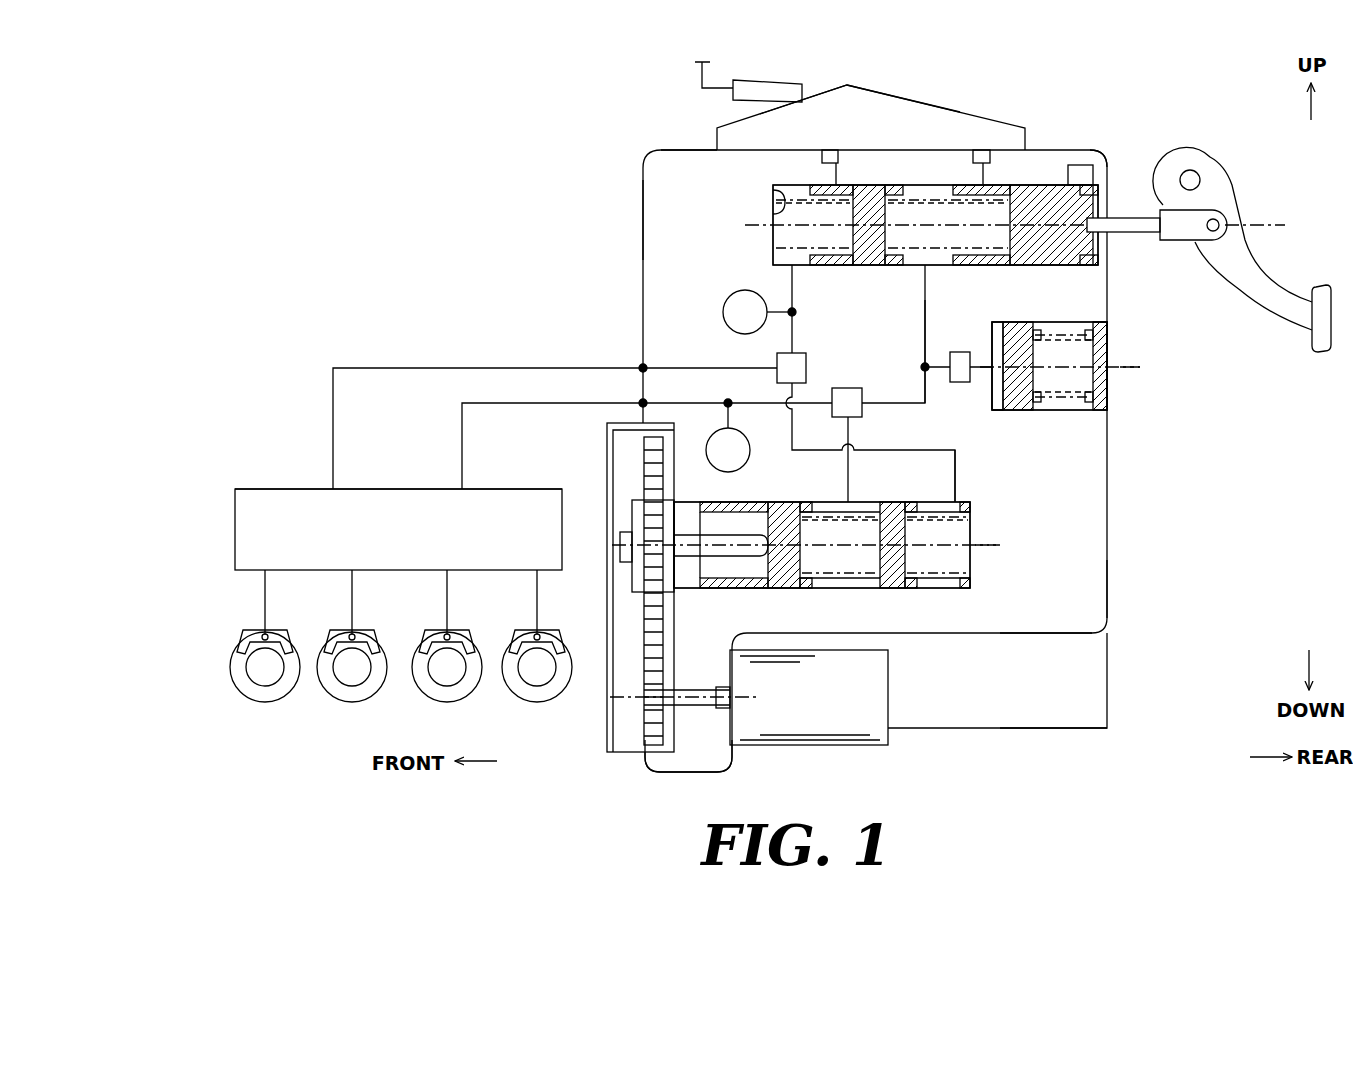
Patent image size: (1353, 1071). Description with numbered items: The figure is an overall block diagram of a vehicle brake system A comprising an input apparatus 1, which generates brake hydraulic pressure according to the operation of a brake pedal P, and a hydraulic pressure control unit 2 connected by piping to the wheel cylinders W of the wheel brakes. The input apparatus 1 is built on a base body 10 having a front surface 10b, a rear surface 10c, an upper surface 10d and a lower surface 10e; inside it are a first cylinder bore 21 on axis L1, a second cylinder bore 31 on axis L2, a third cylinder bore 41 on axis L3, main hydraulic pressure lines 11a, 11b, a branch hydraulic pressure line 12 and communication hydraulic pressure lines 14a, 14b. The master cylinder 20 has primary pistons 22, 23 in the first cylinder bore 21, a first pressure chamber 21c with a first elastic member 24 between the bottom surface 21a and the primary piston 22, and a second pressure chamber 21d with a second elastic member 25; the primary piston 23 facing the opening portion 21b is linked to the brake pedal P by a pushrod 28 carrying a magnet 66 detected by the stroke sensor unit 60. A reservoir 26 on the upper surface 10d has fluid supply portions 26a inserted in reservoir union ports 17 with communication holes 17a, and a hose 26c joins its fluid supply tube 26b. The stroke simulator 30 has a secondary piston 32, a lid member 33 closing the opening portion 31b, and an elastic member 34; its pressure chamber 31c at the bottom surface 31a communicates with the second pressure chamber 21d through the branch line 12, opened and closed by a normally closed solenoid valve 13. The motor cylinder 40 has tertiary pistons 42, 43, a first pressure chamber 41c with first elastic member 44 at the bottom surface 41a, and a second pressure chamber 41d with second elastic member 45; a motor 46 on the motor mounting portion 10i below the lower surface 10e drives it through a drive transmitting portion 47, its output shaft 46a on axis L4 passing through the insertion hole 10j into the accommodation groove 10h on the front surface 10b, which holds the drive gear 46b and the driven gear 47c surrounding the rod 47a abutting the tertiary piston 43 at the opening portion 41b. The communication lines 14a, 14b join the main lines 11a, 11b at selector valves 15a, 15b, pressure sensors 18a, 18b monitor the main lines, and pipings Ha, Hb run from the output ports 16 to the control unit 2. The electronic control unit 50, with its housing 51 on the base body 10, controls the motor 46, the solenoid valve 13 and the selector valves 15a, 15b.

The input apparatus 1 is at (1060, 100).
The hydraulic pressure control unit 2 is at (398, 529).
The base body 10 is at (690, 148).
The front surface 10b is at (643, 215).
The rear surface 10c is at (1107, 590).
The upper surface 10d is at (680, 150).
The lower surface 10e is at (1050, 633).
The accommodation groove 10h is at (648, 740).
The motor mounting portion 10i is at (732, 745).
The insertion hole 10j is at (730, 697).
The first main hydraulic pressure line 11a is at (680, 368).
The second main hydraulic pressure line 11b is at (925, 300).
The branch hydraulic pressure line 12 is at (927, 395).
The normally closed solenoid valve 13 is at (960, 352).
The first communication hydraulic pressure line 14a is at (955, 465).
The second communication hydraulic pressure line 14b is at (848, 470).
The first selector valve 15a is at (777, 370).
The second selector valve 15b is at (862, 398).
The output ports 16 is at (643, 368).
The reservoir union ports 17 is at (836, 150).
The communication holes 17a is at (836, 172).
The pressure sensor 18a is at (757, 312).
The pressure sensor 18b is at (728, 435).
The master cylinder 20 is at (1053, 173).
The first cylinder bore 21 is at (1030, 195).
The bottom surface 21a is at (775, 195).
The opening portion 21b is at (1112, 218).
The first pressure chamber 21c is at (813, 224).
The second pressure chamber 21d is at (948, 224).
The primary piston 22 is at (868, 265).
The primary piston 23 is at (1035, 265).
The first elastic member 24 is at (790, 186).
The second elastic member 25 is at (912, 190).
The reservoir 26 is at (878, 115).
The fluid supply portions 26a is at (830, 150).
The fluid supply tube 26b is at (772, 88).
The hose 26c is at (700, 68).
The pushrod 28 is at (1140, 232).
The stroke simulator 30 is at (1112, 378).
The second cylinder bore 31 is at (1075, 410).
The bottom surface 31a is at (997, 410).
The opening portion 31b is at (1107, 408).
The pressure chamber 31c is at (997, 330).
The secondary piston 32 is at (1015, 410).
The lid member 33 is at (1105, 345).
The elastic member 34 is at (1093, 330).
The motor cylinder 40 is at (987, 510).
The third cylinder bore 41 is at (975, 580).
The bottom surface 41a is at (970, 510).
The opening portion 41b is at (700, 558).
The first pressure chamber 41c is at (937, 545).
The second pressure chamber 41d is at (840, 545).
The tertiary piston 42 is at (885, 588).
The tertiary piston 43 is at (788, 590).
The first elastic member 44 is at (950, 588).
The second elastic member 45 is at (868, 588).
The motor 46 is at (888, 690).
The output shaft 46a is at (700, 688).
The drive gear 46b is at (645, 698).
The drive transmitting portion 47 is at (604, 445).
The rod 47a is at (710, 560).
The driven gear 47c is at (643, 490).
The electronic control unit 50 is at (1110, 668).
The housing 51 is at (1097, 712).
The stroke sensor unit 60 is at (1093, 172).
The magnet 66 is at (1098, 188).
The vehicle brake system A is at (520, 168).
The piping Ha is at (440, 368).
The piping Hb is at (462, 420).
The axis L1 is at (1272, 225).
The axis L2 is at (1160, 367).
The axis L3 is at (1010, 545).
The axis L4 is at (748, 700).
The brake pedal P is at (1320, 287).
The wheel cylinders W is at (545, 630).